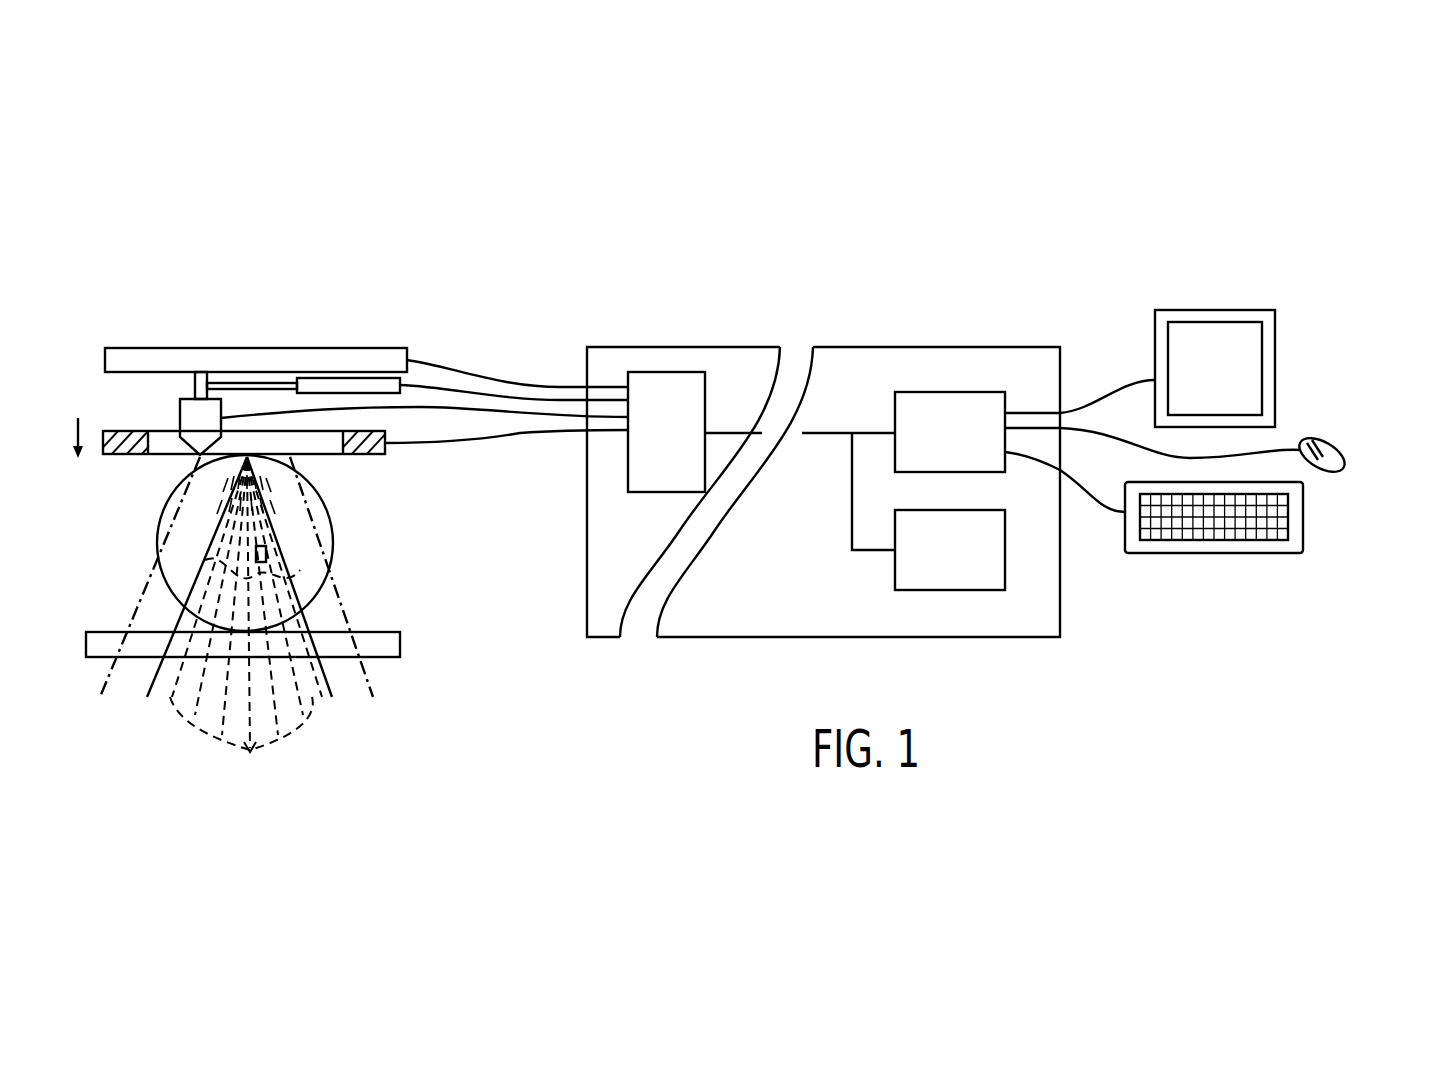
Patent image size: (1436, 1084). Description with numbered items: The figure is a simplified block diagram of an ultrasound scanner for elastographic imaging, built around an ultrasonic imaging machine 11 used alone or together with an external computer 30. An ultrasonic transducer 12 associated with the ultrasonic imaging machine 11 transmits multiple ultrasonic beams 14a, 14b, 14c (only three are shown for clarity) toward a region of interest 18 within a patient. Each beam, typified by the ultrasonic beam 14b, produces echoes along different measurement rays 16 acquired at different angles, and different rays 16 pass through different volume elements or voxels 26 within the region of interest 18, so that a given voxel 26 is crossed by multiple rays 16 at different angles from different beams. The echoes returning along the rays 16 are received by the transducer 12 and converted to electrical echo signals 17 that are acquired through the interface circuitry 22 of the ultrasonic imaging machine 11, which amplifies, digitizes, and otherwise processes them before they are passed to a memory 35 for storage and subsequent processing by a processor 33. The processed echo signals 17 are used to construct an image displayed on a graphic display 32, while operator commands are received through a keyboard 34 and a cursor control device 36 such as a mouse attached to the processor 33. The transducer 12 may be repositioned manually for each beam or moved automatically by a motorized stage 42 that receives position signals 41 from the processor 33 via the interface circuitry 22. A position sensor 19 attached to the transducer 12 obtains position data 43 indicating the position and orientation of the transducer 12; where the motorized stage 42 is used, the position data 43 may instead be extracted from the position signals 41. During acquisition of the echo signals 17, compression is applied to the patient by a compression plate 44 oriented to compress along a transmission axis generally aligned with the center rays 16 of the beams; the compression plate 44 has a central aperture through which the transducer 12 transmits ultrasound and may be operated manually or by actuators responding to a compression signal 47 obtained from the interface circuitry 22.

The ultrasonic imaging machine 11 is at (683, 347).
The ultrasonic transducer 12 is at (188, 413).
The ultrasonic beam 14a is at (193, 482).
The ultrasonic beam 14b is at (240, 485).
The ultrasonic beam 14c is at (293, 482).
The measurement rays 16 is at (252, 765).
The electrical echo signals 17 is at (458, 413).
The region of interest 18 is at (183, 587).
The position sensor 19 is at (347, 383).
The interface circuitry 22 is at (680, 452).
The volume element (voxel) 26 is at (266, 555).
The external computer 30 is at (940, 347).
The graphic display 32 is at (1275, 370).
The processor 33 is at (963, 452).
The keyboard 34 is at (1303, 512).
The memory 35 is at (963, 565).
The cursor control device 36 is at (1347, 459).
The position signals 41 is at (452, 372).
The motorized stage 42 is at (155, 348).
The position data 43 is at (495, 397).
The compression plate 44 is at (372, 455).
The compression signal 47 is at (515, 433).